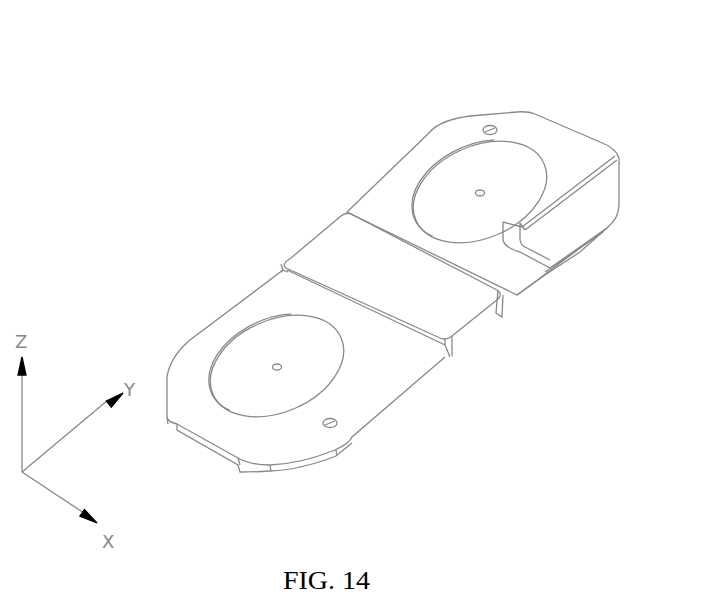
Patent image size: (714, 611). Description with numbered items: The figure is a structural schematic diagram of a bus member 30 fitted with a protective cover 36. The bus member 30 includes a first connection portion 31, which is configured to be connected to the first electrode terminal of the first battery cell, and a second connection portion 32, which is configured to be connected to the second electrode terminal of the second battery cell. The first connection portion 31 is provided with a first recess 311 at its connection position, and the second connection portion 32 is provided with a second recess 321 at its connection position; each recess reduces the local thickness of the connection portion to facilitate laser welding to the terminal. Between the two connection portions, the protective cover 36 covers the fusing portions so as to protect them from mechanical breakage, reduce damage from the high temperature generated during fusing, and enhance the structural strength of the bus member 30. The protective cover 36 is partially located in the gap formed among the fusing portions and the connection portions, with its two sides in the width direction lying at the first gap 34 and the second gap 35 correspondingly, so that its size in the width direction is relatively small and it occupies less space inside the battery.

The bus member 30 is at (377, 17).
The first connection portion 31 is at (432, 145).
The first recess 311 is at (518, 175).
The second connection portion 32 is at (237, 337).
The second recess 321 is at (255, 397).
The first gap 34 is at (520, 327).
The second gap 35 is at (252, 246).
The protective cover 36 is at (357, 235).